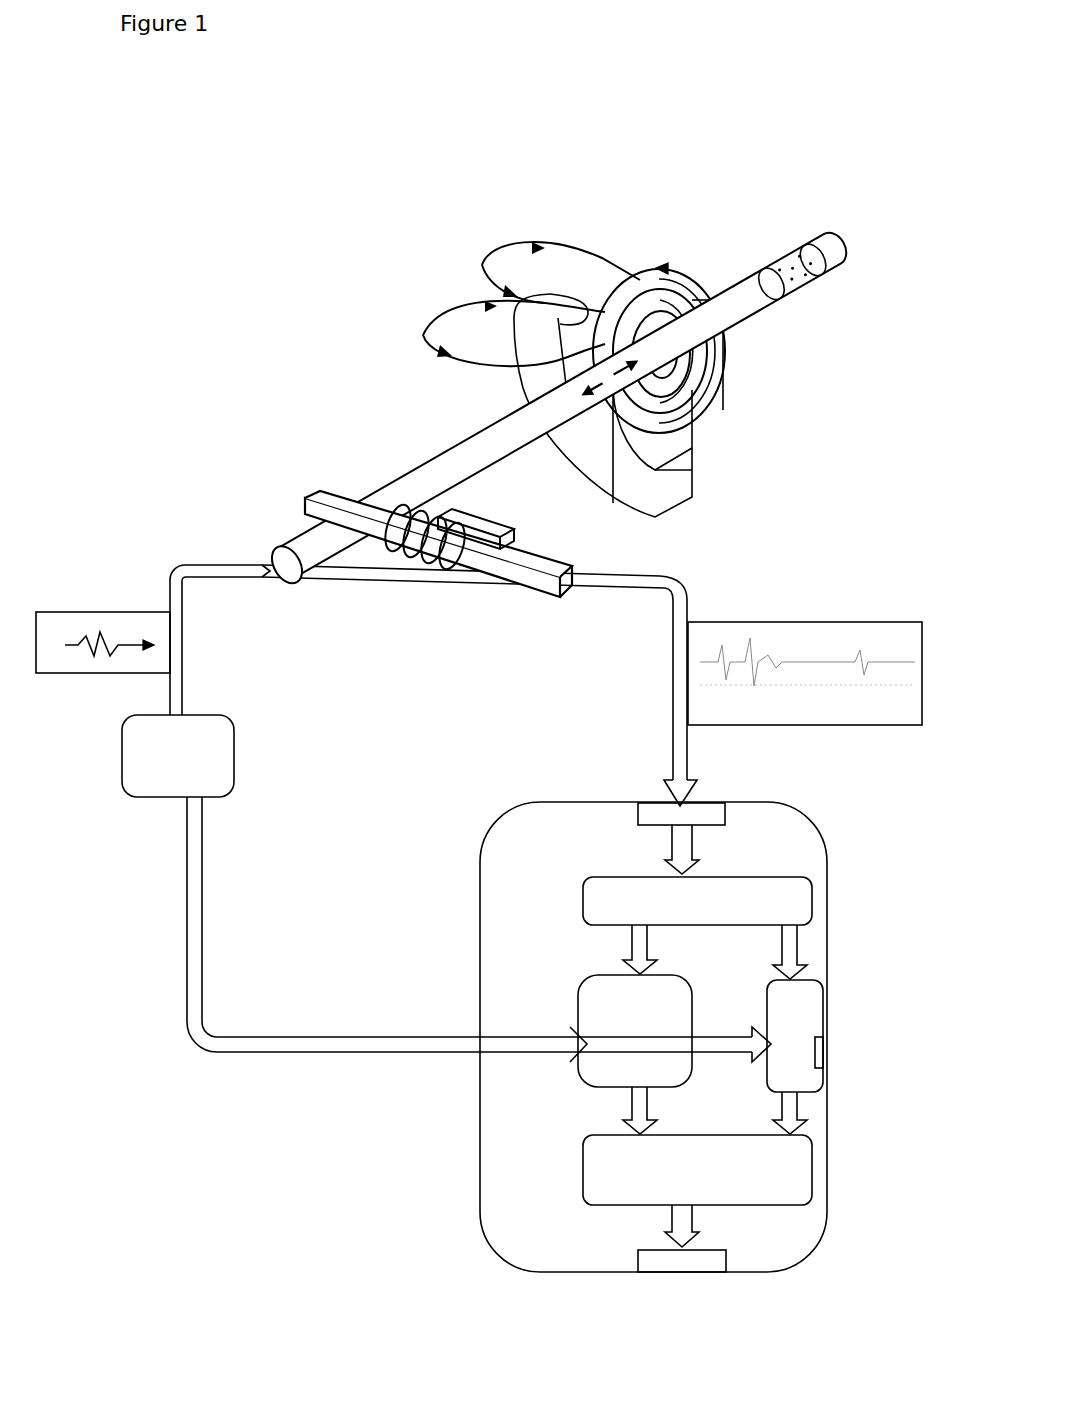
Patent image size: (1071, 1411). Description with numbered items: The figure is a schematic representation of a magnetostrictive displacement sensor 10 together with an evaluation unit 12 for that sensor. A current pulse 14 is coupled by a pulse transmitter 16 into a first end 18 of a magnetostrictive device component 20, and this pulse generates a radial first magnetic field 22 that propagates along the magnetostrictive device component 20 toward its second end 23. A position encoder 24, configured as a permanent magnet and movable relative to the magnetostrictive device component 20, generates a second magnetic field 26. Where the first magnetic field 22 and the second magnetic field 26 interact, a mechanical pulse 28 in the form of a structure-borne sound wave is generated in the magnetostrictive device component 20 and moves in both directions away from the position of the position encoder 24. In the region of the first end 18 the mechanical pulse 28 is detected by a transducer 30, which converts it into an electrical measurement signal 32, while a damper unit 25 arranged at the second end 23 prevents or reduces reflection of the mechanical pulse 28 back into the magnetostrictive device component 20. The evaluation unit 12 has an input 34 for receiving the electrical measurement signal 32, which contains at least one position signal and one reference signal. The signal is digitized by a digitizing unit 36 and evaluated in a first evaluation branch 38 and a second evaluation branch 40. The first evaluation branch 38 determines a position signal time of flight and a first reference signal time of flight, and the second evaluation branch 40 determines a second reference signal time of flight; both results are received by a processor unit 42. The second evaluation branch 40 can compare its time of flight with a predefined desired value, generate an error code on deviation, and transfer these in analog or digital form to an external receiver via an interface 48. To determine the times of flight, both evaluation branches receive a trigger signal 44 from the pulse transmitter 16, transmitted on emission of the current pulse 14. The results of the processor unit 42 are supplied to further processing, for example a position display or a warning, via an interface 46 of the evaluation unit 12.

The magnetostrictive displacement sensor 10 is at (208, 203).
The evaluation unit 12 is at (538, 830).
The current pulse 14 is at (107, 617).
The pulse transmitter 16 is at (147, 780).
The first end 18 is at (300, 592).
The magnetostrictive device component 20 is at (417, 497).
The first magnetic field 22 is at (690, 277).
The second end 23 is at (843, 240).
The position encoder 24 is at (678, 490).
The damper unit 25 is at (812, 278).
The second magnetic field 26 is at (493, 267).
The mechanical pulse 28 is at (582, 408).
The transducer 30 is at (315, 493).
The electrical measurement signal 32 is at (843, 632).
The input 34 is at (663, 810).
The digitizing unit 36 is at (593, 908).
The first evaluation branch 38 is at (588, 1000).
The second evaluation branch 40 is at (823, 998).
The processor unit 42 is at (790, 1170).
The trigger signal 44 is at (362, 1045).
The interface 46 is at (823, 1055).
The interface 48 is at (683, 1262).